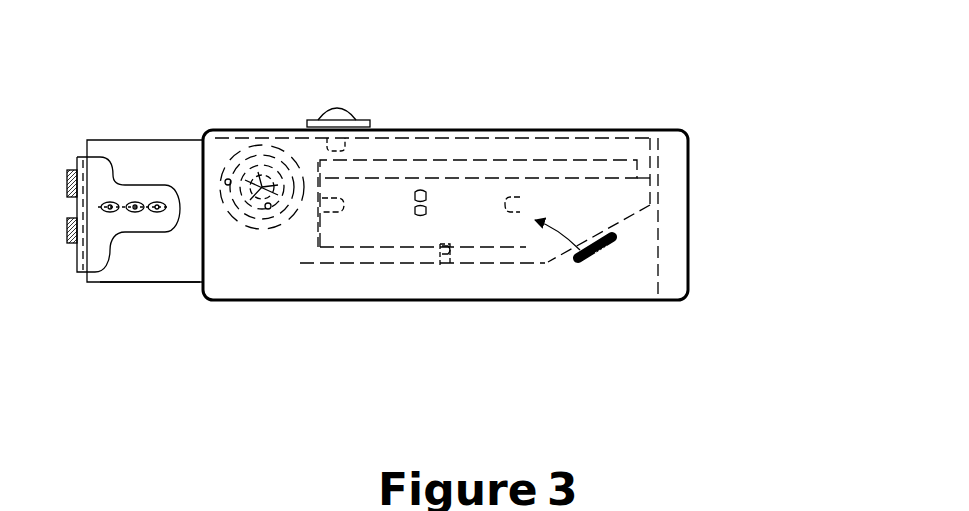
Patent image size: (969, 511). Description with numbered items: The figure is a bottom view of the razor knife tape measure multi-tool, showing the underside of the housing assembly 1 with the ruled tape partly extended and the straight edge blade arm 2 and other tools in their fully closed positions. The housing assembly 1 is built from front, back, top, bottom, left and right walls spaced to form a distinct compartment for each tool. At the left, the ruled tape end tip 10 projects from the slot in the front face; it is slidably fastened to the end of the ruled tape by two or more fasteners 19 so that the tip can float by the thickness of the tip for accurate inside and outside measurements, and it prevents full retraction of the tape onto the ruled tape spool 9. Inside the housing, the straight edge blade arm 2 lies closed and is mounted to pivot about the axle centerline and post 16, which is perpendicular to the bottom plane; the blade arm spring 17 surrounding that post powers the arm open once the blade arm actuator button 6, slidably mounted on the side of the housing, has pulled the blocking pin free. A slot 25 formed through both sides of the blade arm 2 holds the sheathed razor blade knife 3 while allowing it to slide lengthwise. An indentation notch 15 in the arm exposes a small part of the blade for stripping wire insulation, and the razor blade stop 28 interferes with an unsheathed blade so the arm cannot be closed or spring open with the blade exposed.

The housing assembly 1 is at (690, 162).
The straight edge blade arm 2 is at (643, 218).
The sheathed razor blade knife 3 is at (590, 268).
The blade arm actuator button 6 is at (340, 103).
The ruled tape spool 9 is at (155, 287).
The ruled tape end tip 10 is at (118, 163).
The indentation notch 15 is at (443, 270).
The axle centerline and post 16 is at (245, 215).
The blade arm spring 17 is at (293, 215).
The fasteners 19 is at (139, 195).
The slot 25 is at (568, 160).
The razor blade stop 28 is at (618, 252).